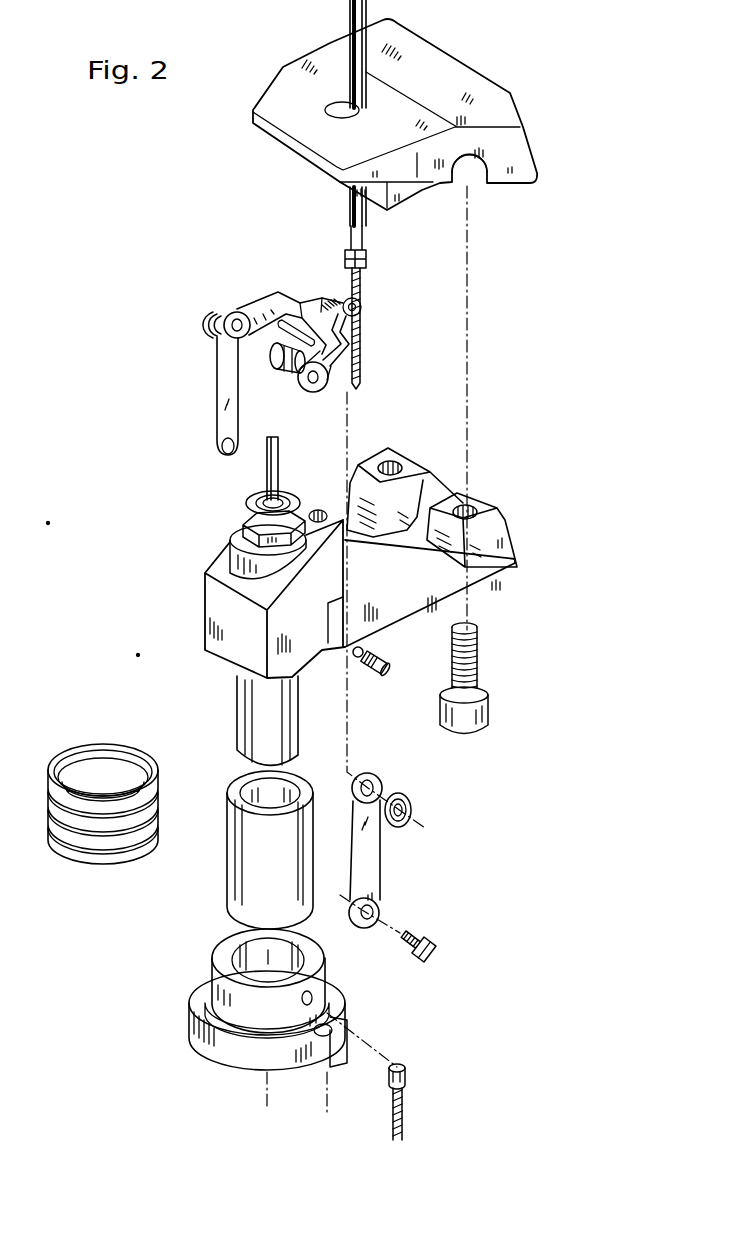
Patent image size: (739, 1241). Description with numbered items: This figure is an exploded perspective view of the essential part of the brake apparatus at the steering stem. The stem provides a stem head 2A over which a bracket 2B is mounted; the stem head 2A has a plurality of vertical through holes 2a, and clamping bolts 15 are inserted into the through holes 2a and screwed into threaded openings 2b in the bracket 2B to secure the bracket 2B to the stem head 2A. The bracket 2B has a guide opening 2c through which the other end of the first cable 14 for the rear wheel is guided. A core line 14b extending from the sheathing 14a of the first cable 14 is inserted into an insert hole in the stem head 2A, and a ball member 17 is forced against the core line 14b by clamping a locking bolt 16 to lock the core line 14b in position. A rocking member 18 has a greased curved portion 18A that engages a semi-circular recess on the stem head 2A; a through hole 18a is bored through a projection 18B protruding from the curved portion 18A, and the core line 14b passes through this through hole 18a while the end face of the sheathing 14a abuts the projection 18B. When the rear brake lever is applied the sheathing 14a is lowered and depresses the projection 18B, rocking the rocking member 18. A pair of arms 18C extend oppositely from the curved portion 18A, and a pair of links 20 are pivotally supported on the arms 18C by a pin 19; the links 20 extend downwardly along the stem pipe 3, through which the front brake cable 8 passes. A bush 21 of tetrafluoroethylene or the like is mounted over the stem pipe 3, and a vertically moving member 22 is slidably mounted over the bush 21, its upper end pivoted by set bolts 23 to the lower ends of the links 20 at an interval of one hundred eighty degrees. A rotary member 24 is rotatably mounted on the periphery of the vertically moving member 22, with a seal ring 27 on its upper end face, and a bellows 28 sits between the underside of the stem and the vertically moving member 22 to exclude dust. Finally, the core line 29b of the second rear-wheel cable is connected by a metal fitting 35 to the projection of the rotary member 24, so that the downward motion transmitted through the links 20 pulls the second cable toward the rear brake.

The first cable 14 is at (380, 44).
The bracket 2B is at (520, 143).
The guide opening 2c is at (326, 112).
The threaded opening 2b is at (468, 172).
The sheathing 14a is at (365, 240).
The core line 14b is at (361, 366).
The rocking member 18 is at (312, 282).
The curved portion 18A is at (298, 318).
The arm 18C is at (240, 312).
The through hole 18a is at (362, 305).
The projection 18B is at (356, 316).
The pin 19 is at (222, 334).
The link 20 is at (225, 411).
The brake cable 8 is at (266, 460).
The stem head 2A is at (486, 578).
The through hole 2a is at (320, 510).
The locking bolt 16 is at (388, 662).
The ball member 17 is at (357, 660).
The clamping bolt 15 is at (480, 674).
The stem pipe 3 is at (237, 708).
The bellows 28 is at (104, 746).
The bush 21 is at (226, 884).
The vertically moving member 22 is at (215, 957).
The rotary member 24 is at (347, 1001).
The seal ring 27 is at (206, 1001).
The set bolt 23 is at (433, 957).
The metal fitting 35 is at (406, 1078).
The core line 29b is at (404, 1111).